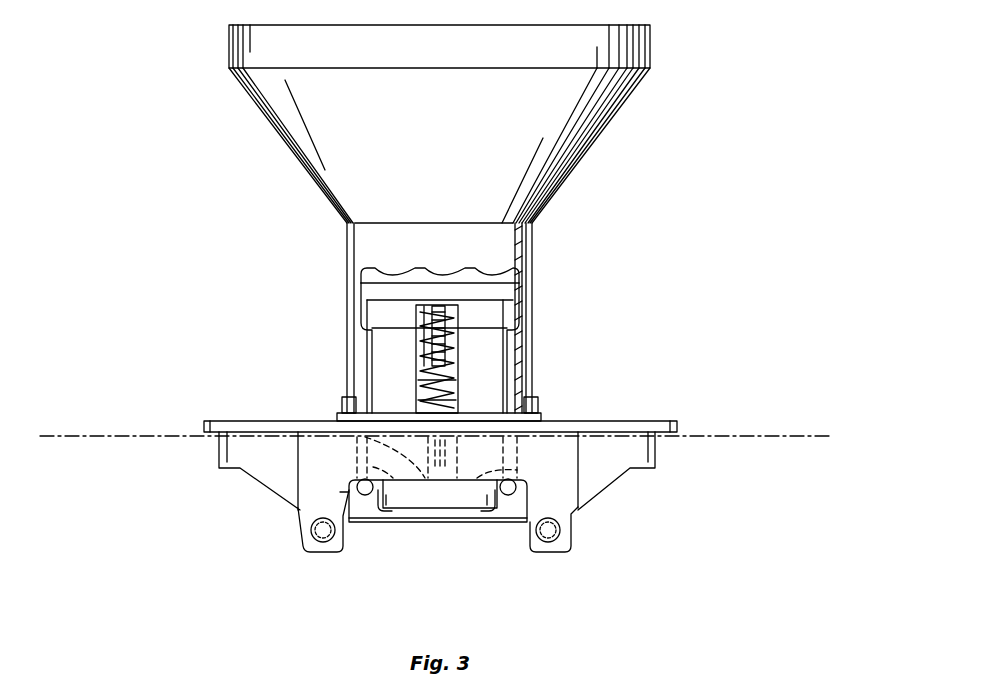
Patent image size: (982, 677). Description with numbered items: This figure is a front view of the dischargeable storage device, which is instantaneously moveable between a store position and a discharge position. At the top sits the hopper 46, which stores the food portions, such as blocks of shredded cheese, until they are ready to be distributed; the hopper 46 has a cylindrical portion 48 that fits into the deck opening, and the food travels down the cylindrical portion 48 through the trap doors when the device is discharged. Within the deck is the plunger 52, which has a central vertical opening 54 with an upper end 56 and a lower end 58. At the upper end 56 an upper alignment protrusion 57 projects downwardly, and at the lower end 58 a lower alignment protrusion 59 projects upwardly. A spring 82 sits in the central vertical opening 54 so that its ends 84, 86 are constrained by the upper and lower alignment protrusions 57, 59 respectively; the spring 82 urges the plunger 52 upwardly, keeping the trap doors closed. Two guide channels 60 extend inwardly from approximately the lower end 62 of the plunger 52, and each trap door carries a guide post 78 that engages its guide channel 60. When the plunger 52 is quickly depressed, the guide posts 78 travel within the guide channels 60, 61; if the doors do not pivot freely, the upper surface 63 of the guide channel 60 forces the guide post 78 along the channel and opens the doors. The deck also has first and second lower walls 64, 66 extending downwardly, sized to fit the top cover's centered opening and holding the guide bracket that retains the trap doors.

The hopper 46 is at (568, 128).
The cylindrical portion 48 is at (490, 250).
The plunger 52 is at (495, 347).
The central vertical opening 54 is at (456, 368).
The upper end 56 is at (418, 308).
The upper alignment protrusion 57 is at (418, 323).
The lower end 58 is at (393, 478).
The lower alignment protrusion 59 is at (340, 403).
The guide channels 60 is at (378, 497).
The guide channel 61 is at (372, 502).
The lower end of the plunger 62 is at (497, 522).
The upper surface of the guide channel 63 is at (537, 407).
The first lower wall 64 is at (303, 542).
The second lower wall 66 is at (575, 525).
The guide post 78 is at (303, 516).
The spring 82 is at (418, 385).
The spring end 84 is at (458, 318).
The spring end 86 is at (417, 404).